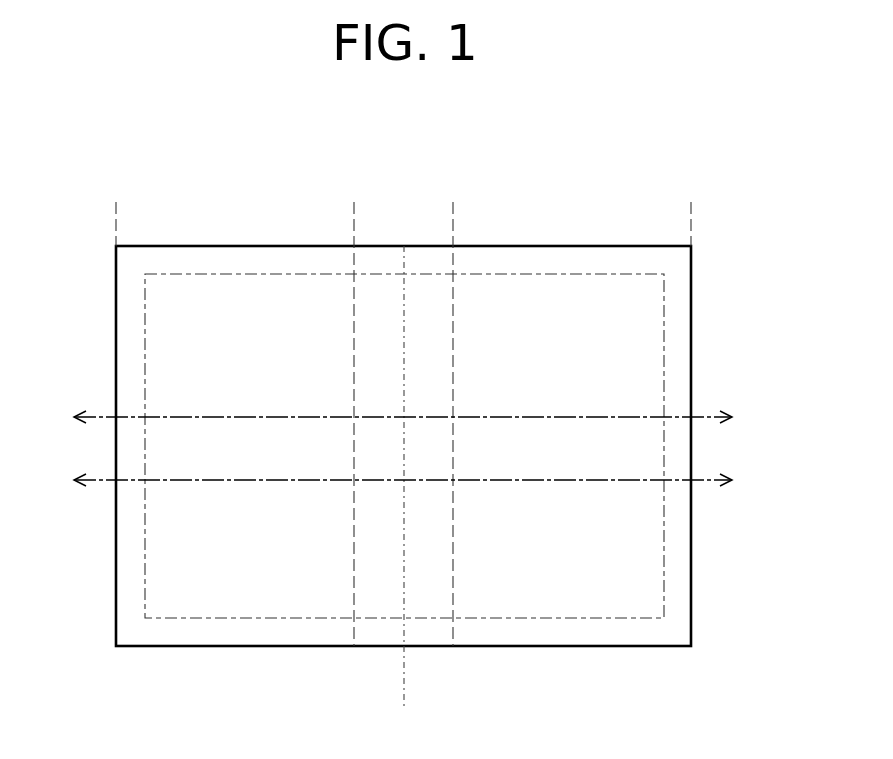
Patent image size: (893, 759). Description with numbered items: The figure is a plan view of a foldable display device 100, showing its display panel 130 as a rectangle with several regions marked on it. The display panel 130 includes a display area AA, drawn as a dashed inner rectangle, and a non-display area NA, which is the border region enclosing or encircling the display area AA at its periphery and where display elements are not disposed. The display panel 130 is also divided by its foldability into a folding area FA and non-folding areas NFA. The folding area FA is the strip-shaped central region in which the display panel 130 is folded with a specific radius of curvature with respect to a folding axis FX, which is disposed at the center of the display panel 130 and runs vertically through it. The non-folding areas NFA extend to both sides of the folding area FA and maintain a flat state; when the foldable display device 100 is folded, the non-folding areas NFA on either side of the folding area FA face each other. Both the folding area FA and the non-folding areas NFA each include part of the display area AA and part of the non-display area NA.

The foldable display device 100 is at (696, 120).
The display panel 130 is at (691, 312).
The display area AA is at (593, 605).
The non-display area NA is at (657, 625).
The folding area FA is at (453, 217).
The non-folding area NFA is at (354, 217).
The folding axis FX is at (403, 493).